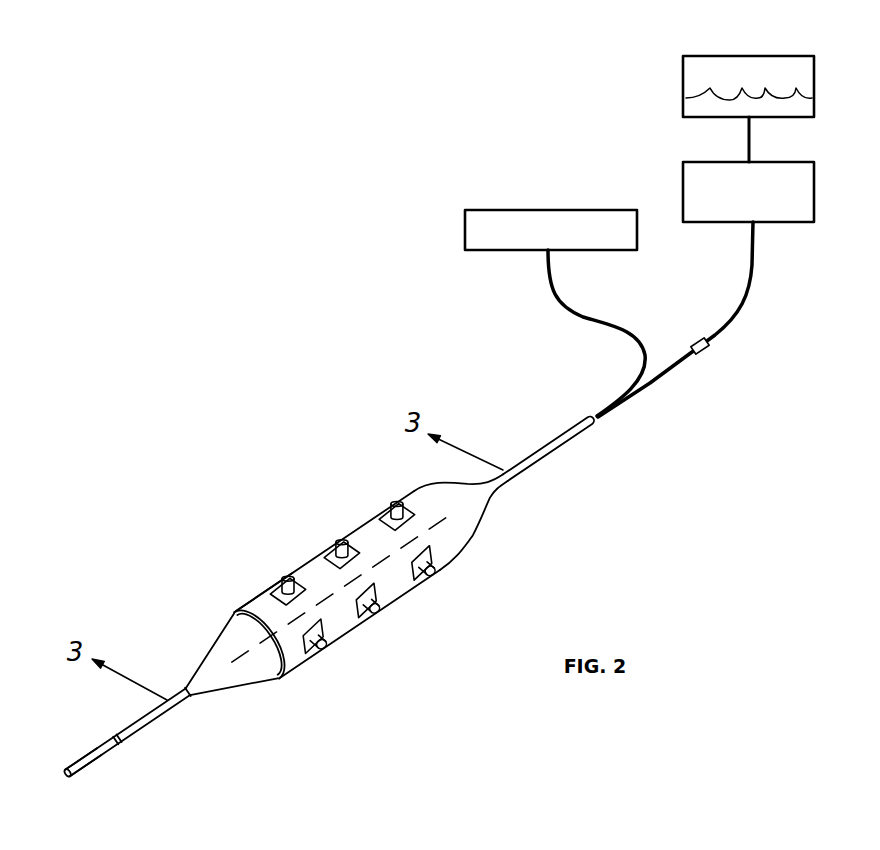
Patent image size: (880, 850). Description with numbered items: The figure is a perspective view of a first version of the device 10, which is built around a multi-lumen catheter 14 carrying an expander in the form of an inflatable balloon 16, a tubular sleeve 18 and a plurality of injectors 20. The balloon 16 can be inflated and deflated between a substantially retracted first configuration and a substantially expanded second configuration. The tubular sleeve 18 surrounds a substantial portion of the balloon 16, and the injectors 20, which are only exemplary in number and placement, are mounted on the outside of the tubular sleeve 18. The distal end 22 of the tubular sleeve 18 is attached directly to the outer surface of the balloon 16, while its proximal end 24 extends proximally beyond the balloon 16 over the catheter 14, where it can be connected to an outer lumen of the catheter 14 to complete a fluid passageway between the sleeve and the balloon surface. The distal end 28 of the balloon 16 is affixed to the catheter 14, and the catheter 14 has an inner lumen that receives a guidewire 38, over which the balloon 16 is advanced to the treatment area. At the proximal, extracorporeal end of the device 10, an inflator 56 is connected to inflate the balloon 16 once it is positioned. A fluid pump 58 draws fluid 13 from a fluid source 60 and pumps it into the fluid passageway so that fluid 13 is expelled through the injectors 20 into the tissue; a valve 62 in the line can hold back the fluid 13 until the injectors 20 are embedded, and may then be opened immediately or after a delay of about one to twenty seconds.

The device 10 is at (234, 462).
The fluid 13 is at (787, 103).
The multi-lumen catheter 14 is at (580, 447).
The inflatable balloon 16 is at (244, 674).
The tubular sleeve 18 is at (258, 598).
The injectors 20 is at (292, 582).
The distal end of tubular sleeve 22 is at (226, 622).
The proximal end of tubular sleeve 24 is at (524, 473).
The distal end of balloon 28 is at (203, 658).
The guidewire 38 is at (100, 762).
The inflator 56 is at (569, 208).
The fluid pump 58 is at (800, 161).
The fluid source 60 is at (725, 48).
The valve 62 is at (707, 352).